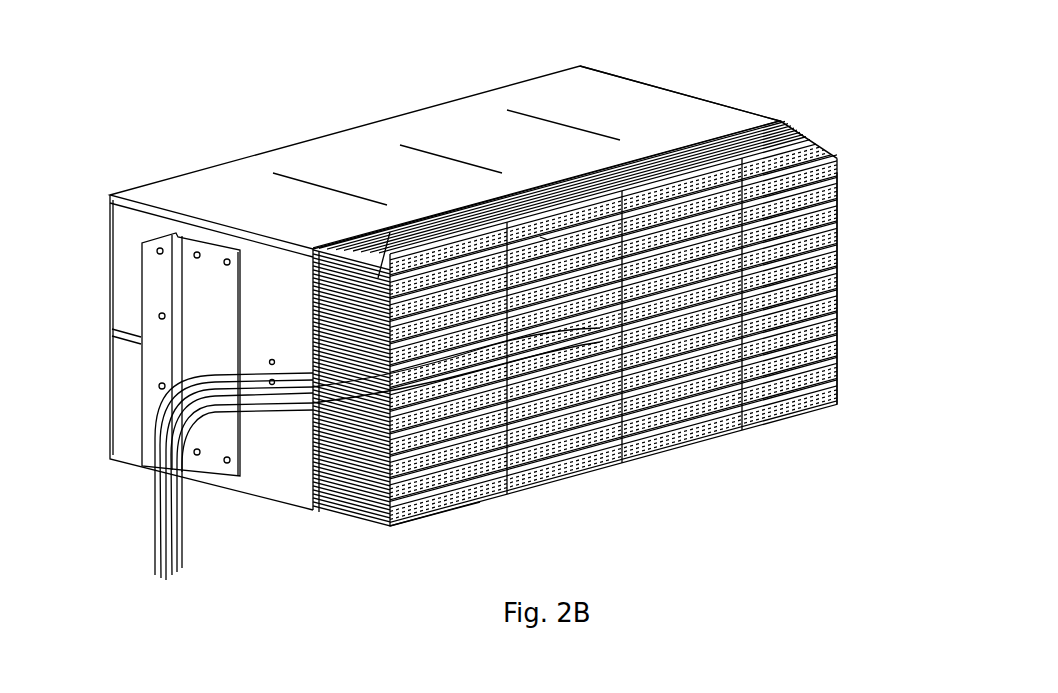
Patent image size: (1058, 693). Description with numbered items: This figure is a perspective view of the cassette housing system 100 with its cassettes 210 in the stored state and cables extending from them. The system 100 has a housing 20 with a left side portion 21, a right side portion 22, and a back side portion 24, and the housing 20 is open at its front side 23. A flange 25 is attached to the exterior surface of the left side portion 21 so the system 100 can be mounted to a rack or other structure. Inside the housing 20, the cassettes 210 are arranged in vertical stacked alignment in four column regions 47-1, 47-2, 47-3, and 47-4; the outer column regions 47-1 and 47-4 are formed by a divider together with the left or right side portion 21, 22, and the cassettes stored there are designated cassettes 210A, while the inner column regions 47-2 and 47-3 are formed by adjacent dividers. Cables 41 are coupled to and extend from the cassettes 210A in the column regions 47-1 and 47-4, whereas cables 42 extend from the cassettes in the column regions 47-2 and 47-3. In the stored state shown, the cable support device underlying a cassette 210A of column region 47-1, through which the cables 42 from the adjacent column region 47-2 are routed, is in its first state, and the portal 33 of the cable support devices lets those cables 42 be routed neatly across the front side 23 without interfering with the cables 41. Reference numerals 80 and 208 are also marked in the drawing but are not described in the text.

The cassette housing system 100 is at (770, 45).
The housing 20 is at (598, 78).
The left side portion 21 is at (215, 237).
The right side portion 22 is at (716, 104).
The front side 23 is at (453, 207).
The back side portion 24 is at (357, 127).
The flange 25 is at (153, 263).
The portal 33 is at (382, 275).
The cables 41 is at (288, 378).
The cables 42 is at (308, 425).
The column region 47-1 is at (467, 386).
The column region 47-2 is at (587, 352).
The column region 47-3 is at (705, 319).
The column region 47-4 is at (811, 311).
The bottom support 80 is at (381, 519).
The module latch 208 is at (585, 172).
The cassettes 210 is at (321, 250).
The cassette 210A is at (320, 503).